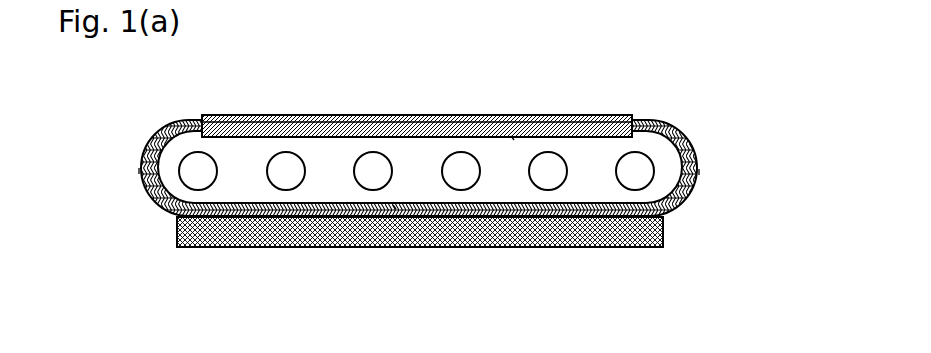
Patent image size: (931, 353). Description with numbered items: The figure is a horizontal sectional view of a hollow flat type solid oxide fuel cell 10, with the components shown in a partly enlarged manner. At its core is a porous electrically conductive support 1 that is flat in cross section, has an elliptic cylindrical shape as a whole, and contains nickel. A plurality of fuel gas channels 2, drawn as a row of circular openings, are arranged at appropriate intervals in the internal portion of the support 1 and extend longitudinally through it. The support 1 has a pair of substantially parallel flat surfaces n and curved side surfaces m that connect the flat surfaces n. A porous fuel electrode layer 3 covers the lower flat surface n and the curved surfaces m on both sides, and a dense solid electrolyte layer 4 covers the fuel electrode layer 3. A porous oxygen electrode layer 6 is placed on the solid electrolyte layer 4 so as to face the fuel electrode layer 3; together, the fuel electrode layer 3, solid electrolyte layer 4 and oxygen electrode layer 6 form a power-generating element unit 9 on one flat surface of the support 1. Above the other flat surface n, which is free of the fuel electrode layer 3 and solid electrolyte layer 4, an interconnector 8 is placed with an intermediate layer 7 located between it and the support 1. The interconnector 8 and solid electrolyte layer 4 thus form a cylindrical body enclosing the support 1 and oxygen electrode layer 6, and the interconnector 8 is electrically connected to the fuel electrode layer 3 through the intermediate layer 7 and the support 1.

The electrically conductive support 1 is at (323, 185).
The fuel gas channels 2 is at (361, 168).
The fuel electrode layer 3 is at (670, 212).
The solid electrolyte layer 4 is at (572, 208).
The oxygen electrode layer 6 is at (548, 238).
The intermediate layer 7 is at (590, 133).
The interconnector 8 is at (373, 118).
The power-generating element unit 9 is at (471, 253).
The fuel cell 10 is at (661, 112).
The flat surfaces n is at (513, 140).
The curved surfaces m is at (139, 171).